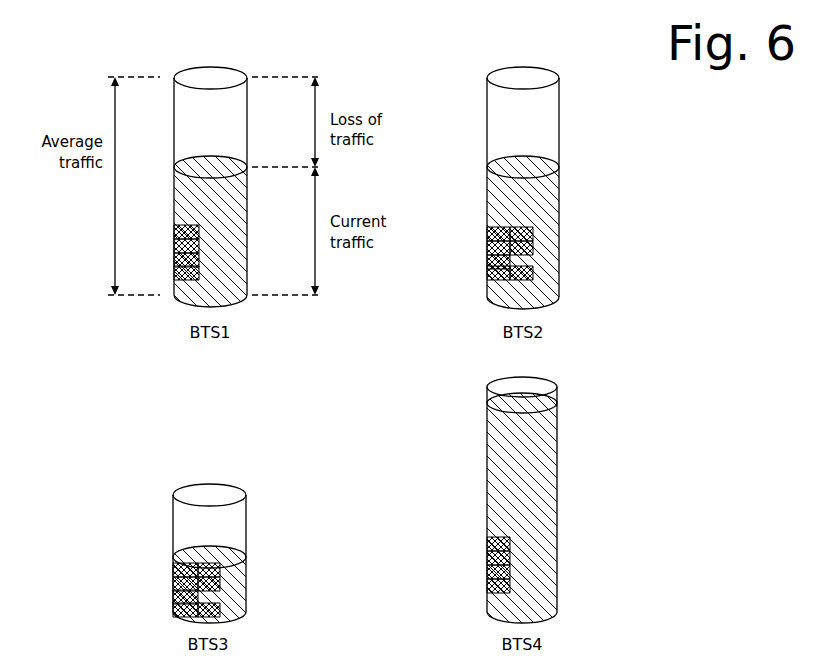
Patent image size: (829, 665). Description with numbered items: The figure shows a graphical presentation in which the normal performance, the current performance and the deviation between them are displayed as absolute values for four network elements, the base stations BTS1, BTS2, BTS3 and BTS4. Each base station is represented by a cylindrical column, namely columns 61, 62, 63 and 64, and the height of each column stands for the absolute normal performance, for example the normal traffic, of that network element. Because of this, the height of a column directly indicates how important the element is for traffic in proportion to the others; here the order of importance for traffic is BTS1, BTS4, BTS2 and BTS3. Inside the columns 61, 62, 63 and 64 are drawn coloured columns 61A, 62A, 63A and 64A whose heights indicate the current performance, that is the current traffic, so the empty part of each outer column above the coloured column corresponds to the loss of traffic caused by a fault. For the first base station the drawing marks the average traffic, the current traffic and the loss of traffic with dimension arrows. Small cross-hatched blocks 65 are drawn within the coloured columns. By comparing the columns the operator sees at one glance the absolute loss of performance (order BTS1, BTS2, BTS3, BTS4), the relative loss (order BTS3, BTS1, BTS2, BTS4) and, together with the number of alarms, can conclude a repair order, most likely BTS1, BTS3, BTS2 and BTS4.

The column 61 is at (235, 67).
The coloured column 61A is at (237, 203).
The column 62 is at (548, 67).
The coloured column 62A is at (550, 203).
The column 63 is at (235, 485).
The coloured column 63A is at (240, 571).
The column 64 is at (548, 378).
The coloured column 64A is at (545, 518).
The occupied traffic slots 65 is at (174, 240).